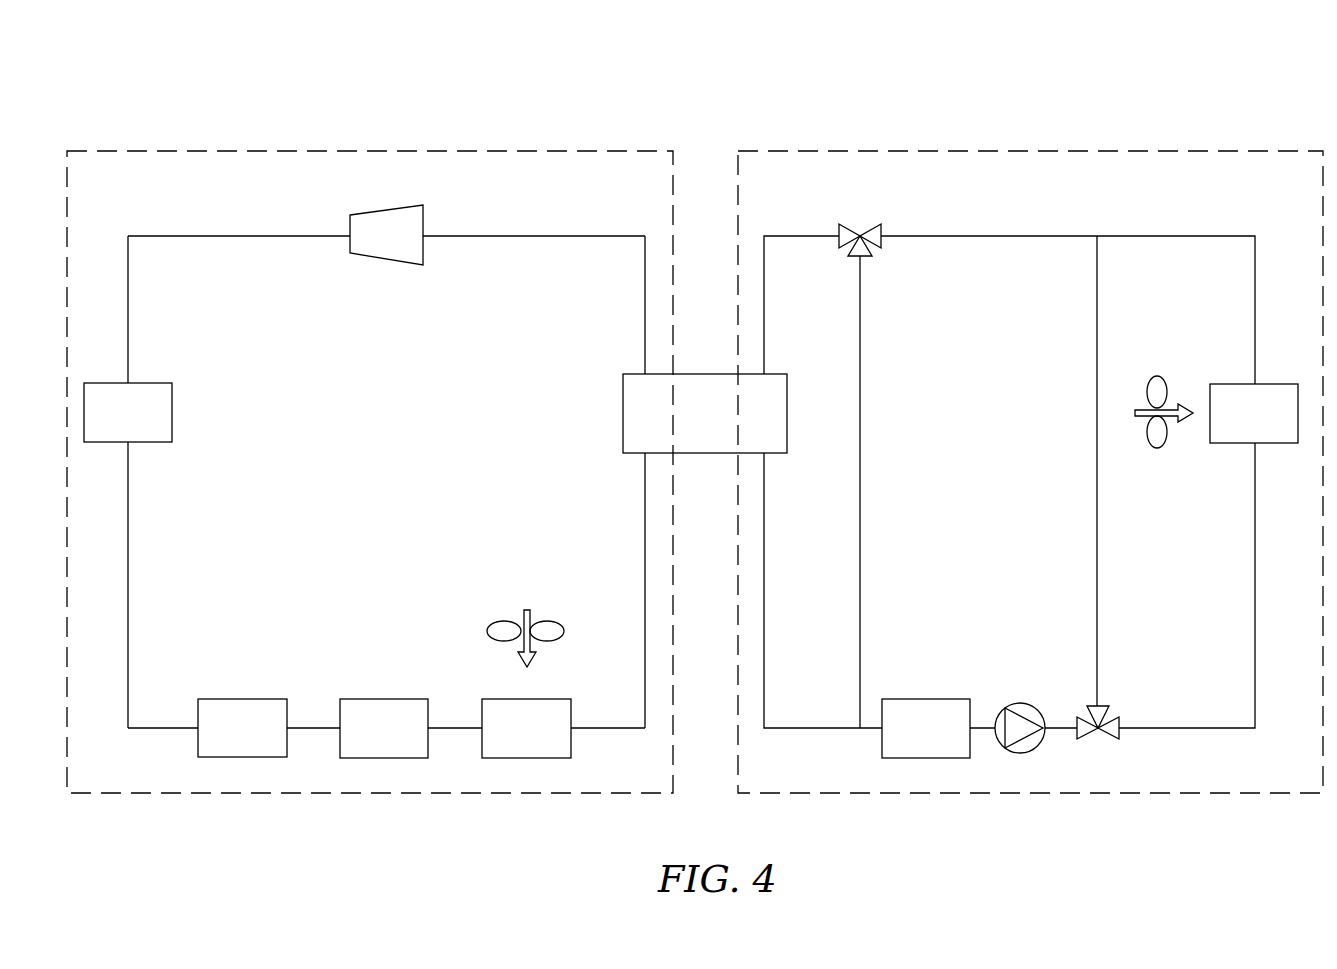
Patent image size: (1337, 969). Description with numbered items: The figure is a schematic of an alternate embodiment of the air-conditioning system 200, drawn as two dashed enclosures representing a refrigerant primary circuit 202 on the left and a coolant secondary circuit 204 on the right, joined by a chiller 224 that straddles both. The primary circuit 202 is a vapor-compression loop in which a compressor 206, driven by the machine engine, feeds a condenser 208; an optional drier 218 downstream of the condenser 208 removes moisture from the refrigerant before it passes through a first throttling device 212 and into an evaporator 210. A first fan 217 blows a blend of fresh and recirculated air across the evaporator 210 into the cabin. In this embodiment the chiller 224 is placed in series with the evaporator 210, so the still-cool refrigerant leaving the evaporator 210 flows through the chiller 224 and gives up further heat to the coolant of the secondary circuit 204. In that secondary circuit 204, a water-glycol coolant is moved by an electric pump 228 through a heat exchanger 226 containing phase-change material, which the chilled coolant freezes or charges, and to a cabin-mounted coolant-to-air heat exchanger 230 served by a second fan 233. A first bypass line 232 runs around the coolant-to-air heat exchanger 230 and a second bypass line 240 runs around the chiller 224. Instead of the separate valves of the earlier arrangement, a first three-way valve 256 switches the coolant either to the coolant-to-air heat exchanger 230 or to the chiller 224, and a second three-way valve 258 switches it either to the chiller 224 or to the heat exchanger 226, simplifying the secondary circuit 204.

The air-conditioning system 200 is at (178, 100).
The primary circuit 202 is at (403, 151).
The secondary circuit 204 is at (1070, 151).
The compressor 206 is at (368, 247).
The condenser 208 is at (110, 425).
The evaporator 210 is at (509, 740).
The first throttling device 212 is at (366, 740).
The first fan 217 is at (487, 632).
The drier 218 is at (224, 740).
The chiller 224 is at (687, 425).
The heat exchanger 226 is at (908, 740).
The pump 228 is at (1020, 703).
The coolant-to-air heat exchanger 230 is at (1236, 425).
The first bypass line 232 is at (1097, 313).
The second fan 233 is at (1160, 448).
The second bypass line 240 is at (860, 363).
The first three-way valve 256 is at (1105, 713).
The second three-way valve 258 is at (858, 232).